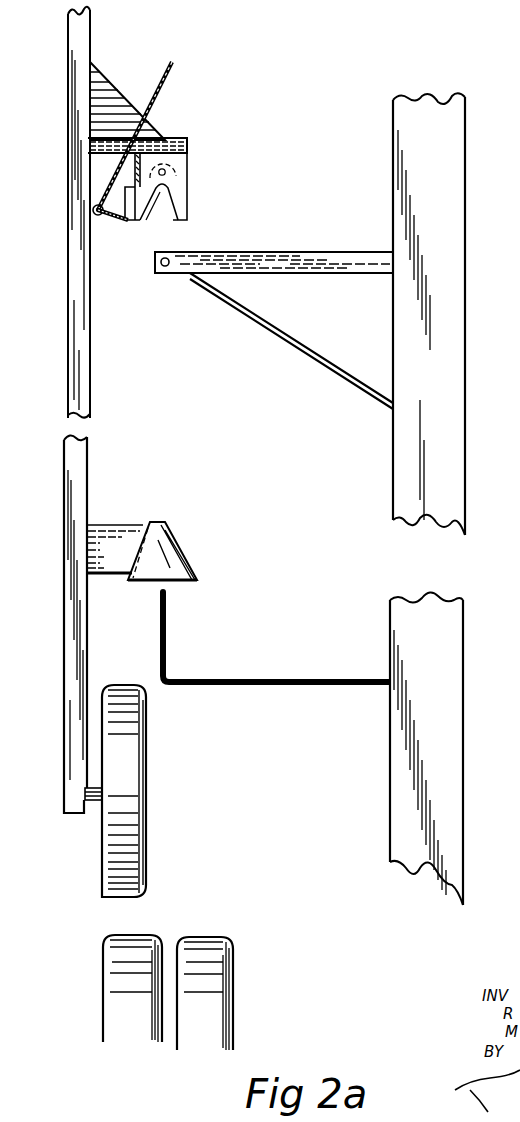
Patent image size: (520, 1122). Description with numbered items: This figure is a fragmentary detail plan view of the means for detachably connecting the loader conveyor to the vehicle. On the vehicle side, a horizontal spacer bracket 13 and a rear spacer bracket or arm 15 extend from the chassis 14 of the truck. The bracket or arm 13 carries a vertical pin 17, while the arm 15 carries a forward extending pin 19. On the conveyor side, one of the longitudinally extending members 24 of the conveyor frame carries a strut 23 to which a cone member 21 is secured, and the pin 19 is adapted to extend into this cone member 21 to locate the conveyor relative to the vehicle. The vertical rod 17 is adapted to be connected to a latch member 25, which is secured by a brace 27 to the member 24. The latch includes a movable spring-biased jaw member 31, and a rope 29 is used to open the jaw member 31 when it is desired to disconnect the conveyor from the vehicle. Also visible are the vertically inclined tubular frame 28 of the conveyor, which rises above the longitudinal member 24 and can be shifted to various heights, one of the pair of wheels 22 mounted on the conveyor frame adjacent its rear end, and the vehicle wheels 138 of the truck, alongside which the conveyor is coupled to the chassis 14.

The horizontal spacer bracket 13 is at (328, 273).
The chassis 14 is at (455, 632).
The rear spacer bracket 15 is at (329, 678).
The vertical pin 17 is at (164, 266).
The forward extending pin 19 is at (168, 630).
The cone member 21 is at (173, 544).
The wheels 22 is at (103, 871).
The strut 23 is at (113, 528).
The longitudinally extending member 24 is at (63, 630).
The latch member 25 is at (178, 183).
The brace 27 is at (121, 103).
The vertically inclined tubular frame 28 is at (64, 548).
The rope 29 is at (165, 97).
The movable spring-biased jaw member 31 is at (139, 222).
The vehicle wheels 138 is at (108, 982).